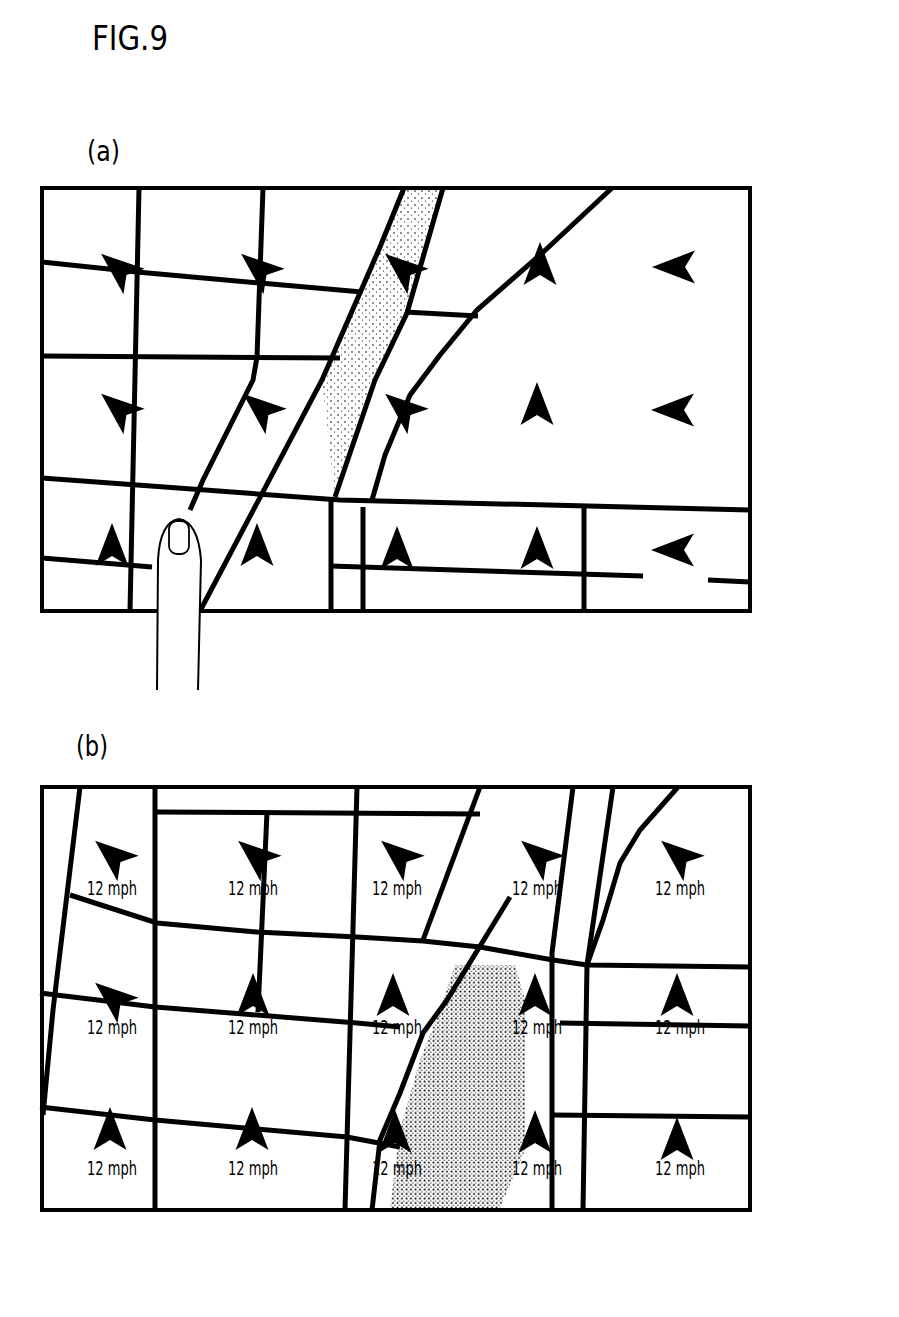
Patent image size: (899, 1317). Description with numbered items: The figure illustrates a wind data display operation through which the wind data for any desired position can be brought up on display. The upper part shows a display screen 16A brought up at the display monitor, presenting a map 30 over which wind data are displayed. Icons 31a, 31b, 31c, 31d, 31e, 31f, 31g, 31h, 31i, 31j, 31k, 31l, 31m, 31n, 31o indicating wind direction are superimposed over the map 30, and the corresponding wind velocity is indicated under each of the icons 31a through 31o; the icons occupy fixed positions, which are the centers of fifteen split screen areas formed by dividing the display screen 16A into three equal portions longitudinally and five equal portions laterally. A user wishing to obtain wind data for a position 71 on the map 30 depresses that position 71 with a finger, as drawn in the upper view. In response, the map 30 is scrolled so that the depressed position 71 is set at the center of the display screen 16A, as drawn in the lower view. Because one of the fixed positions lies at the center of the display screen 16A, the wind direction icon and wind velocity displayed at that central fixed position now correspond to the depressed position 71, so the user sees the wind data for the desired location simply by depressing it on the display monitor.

The display screen 16A is at (661, 183).
The map 30 is at (730, 235).
The icon indicating wind direction 31a is at (140, 273).
The icon indicating wind direction 31b is at (280, 273).
The icon indicating wind direction 31c is at (422, 273).
The icon indicating wind direction 31d is at (556, 270).
The icon indicating wind direction 31e is at (694, 266).
The icon indicating wind direction 31f is at (140, 412).
The icon indicating wind direction 31g is at (282, 412).
The icon indicating wind direction 31h is at (422, 412).
The icon indicating wind direction 31i is at (553, 410).
The icon indicating wind direction 31j is at (693, 408).
The icon indicating wind direction 31k is at (124, 543).
The icon indicating wind direction 31l is at (273, 550).
The icon indicating wind direction 31m is at (413, 552).
The icon indicating wind direction 31n is at (553, 552).
The icon indicating wind direction 31o is at (693, 549).
The position 71 is at (194, 522).